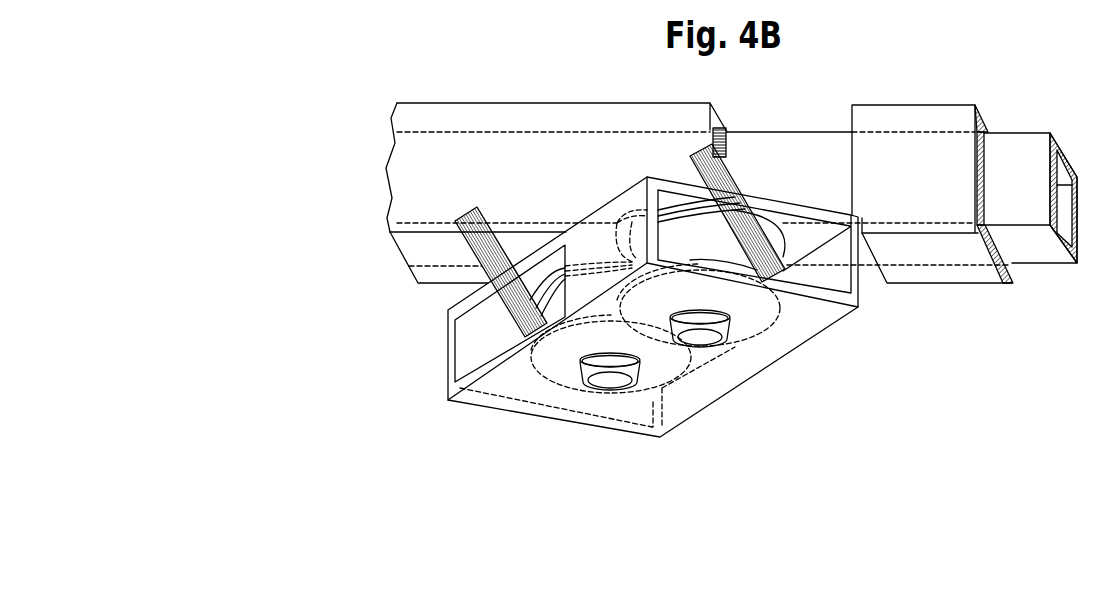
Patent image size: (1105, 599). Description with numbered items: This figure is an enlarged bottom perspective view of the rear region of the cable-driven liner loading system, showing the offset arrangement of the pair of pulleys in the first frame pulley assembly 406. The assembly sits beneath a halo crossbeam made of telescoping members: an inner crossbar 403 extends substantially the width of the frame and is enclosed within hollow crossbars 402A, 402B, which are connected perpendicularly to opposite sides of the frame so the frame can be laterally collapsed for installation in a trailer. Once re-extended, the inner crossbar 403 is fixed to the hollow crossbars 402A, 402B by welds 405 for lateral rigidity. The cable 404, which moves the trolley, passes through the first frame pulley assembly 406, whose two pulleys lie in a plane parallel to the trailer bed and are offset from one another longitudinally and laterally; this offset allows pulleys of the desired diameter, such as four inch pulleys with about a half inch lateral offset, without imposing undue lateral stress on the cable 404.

The hollow crossbar 402A is at (919, 122).
The hollow crossbar 402B is at (513, 113).
The inner crossbar 403 is at (811, 148).
The cable 404 is at (472, 262).
The weld 405 is at (726, 143).
The first frame pulley assembly 406 is at (745, 400).